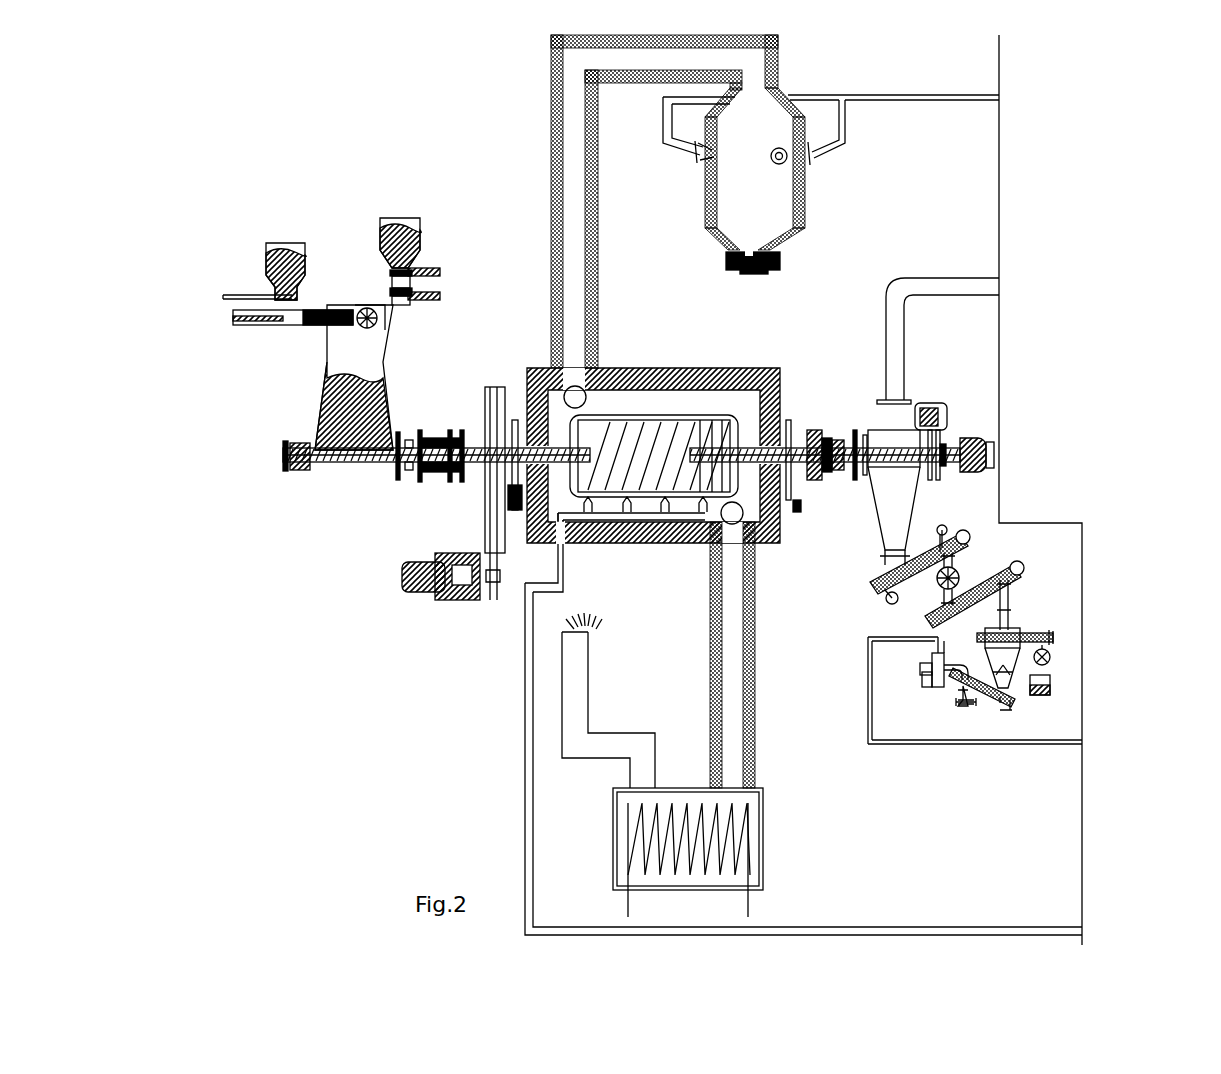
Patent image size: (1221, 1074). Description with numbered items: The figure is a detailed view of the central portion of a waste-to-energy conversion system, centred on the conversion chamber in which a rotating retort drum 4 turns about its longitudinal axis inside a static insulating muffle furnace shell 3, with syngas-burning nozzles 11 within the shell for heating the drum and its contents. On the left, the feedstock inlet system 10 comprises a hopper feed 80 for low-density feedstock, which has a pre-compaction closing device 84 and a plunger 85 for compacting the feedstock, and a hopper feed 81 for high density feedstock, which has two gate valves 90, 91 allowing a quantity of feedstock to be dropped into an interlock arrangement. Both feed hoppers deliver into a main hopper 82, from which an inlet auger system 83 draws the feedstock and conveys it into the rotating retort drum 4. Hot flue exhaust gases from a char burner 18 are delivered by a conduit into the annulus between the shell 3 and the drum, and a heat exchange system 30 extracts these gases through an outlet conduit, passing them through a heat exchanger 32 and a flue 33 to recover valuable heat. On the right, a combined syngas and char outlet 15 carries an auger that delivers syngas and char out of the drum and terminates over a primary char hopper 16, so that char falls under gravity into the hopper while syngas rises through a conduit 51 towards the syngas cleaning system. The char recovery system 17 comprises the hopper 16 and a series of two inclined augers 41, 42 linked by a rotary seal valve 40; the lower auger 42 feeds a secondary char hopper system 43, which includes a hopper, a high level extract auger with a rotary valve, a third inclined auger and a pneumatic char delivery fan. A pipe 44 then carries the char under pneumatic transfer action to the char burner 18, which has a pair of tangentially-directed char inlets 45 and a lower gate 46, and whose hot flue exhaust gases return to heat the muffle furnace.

The feedstock inlet system 10 is at (240, 125).
The static insulating shell 3 is at (682, 362).
The rotating retort drum 4 is at (633, 410).
The syngas-burning nozzles 11 is at (598, 545).
The combined syngas and char outlet 15 is at (827, 500).
The char hopper 16 is at (930, 497).
The char recovery system 17 is at (1180, 520).
The char burner 18 is at (825, 84).
The heat exchange system 30 is at (775, 827).
The heat exchanger 32 is at (722, 892).
The flue 33 is at (570, 676).
The rotary seal valve 40 is at (937, 578).
The inclined auger 41 is at (977, 537).
The lower inclined auger 42 is at (1027, 580).
The secondary char hopper system 43 is at (1030, 703).
The pipe 44 is at (965, 95).
The tangentially-directed char inlets 45 is at (700, 158).
The lower gate 46 is at (783, 266).
The conduit 51 is at (982, 298).
The hopper feed 80 is at (262, 253).
The hopper feed 81 is at (423, 243).
The main hopper 82 is at (300, 405).
The inlet auger system 83 is at (400, 487).
The pre-compaction closing device 84 is at (232, 297).
The plunger 85 is at (238, 325).
The gate valve 90 is at (437, 273).
The gate valve 91 is at (428, 300).